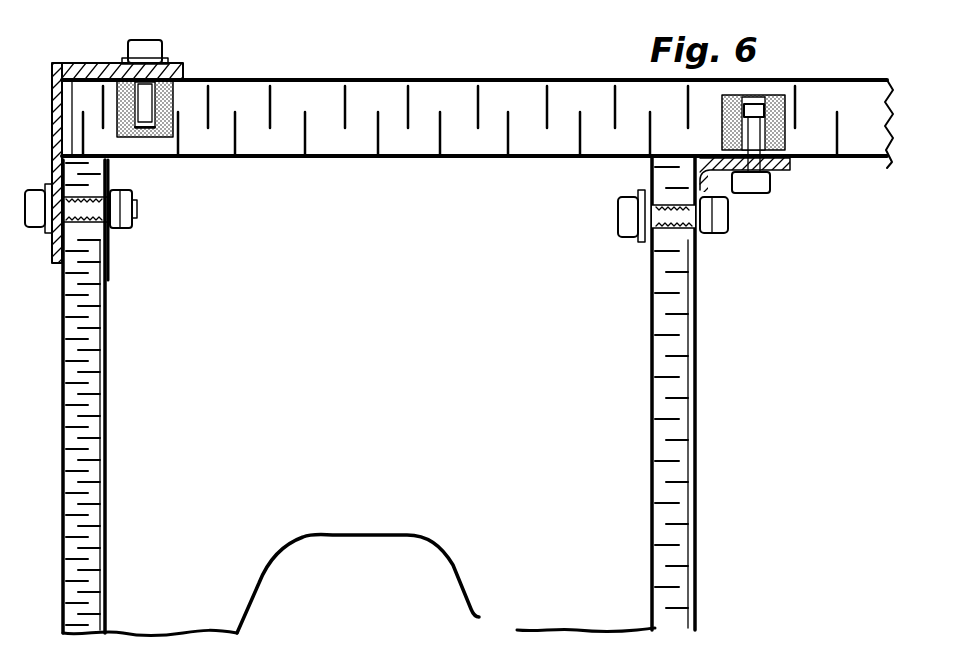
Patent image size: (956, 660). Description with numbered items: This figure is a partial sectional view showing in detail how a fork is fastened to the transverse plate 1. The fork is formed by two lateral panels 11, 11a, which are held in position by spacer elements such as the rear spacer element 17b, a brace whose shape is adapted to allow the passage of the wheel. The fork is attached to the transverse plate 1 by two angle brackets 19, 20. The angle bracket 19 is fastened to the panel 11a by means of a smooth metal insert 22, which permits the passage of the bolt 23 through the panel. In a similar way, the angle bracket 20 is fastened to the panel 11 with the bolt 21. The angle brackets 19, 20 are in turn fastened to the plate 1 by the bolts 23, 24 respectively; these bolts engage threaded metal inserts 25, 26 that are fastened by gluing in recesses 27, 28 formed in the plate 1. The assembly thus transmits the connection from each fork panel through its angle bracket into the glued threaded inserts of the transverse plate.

The transverse plate 1 is at (506, 92).
The panel 11 is at (680, 528).
The panel 11a is at (93, 462).
The rear spacer element 17b is at (328, 566).
The angle bracket 19 is at (61, 65).
The angle bracket 20 is at (788, 166).
The bolt 21 is at (725, 229).
The smooth metal insert 22 is at (106, 263).
The bolt 23 is at (158, 50).
The bolt 24 is at (759, 184).
The threaded metal insert 25 is at (159, 158).
The threaded metal insert 26 is at (738, 100).
The recess 27 is at (177, 98).
The recess 28 is at (773, 120).